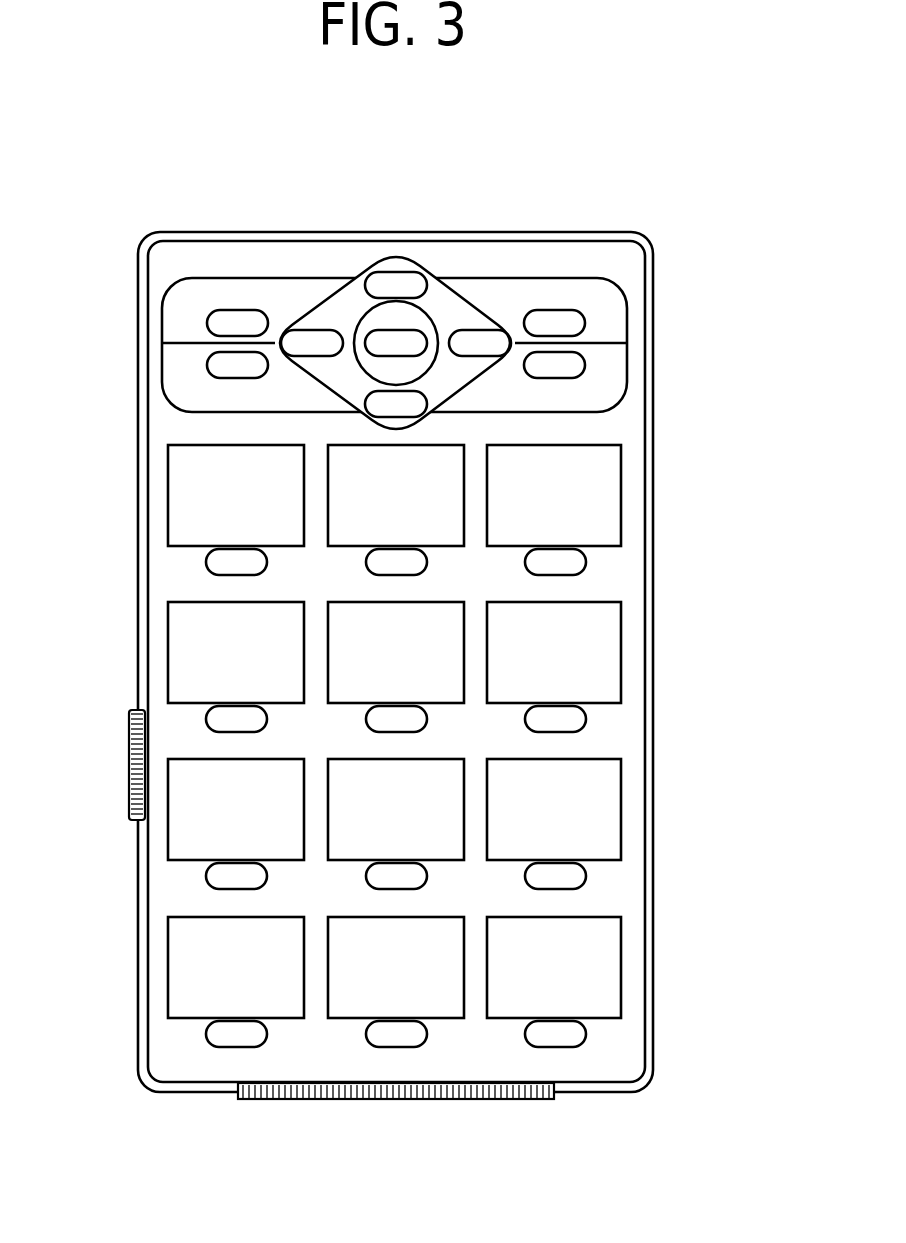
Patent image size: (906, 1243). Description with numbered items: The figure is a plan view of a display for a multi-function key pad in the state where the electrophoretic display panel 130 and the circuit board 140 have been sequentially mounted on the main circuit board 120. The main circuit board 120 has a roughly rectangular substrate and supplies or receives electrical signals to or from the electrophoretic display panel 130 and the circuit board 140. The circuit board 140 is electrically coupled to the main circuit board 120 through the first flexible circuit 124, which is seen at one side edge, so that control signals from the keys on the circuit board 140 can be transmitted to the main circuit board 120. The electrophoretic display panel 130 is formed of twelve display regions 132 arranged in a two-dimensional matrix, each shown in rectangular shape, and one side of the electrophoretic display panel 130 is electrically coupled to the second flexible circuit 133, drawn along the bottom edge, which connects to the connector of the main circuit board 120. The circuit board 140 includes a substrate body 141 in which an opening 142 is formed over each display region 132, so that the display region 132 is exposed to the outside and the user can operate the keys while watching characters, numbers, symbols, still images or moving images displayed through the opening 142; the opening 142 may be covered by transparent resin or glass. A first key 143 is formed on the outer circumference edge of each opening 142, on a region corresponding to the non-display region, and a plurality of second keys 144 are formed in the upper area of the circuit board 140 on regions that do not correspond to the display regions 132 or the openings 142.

The main circuit board 120 is at (660, 247).
The first flexible circuit 124 is at (128, 766).
The electrophoretic display panel 130 is at (582, 688).
The display region 132 is at (597, 648).
The second flexible circuit 133 is at (383, 1100).
The circuit board 140 is at (624, 228).
The substrate body 141 is at (568, 255).
The opening 142 is at (616, 510).
The first key 143 is at (573, 568).
The second keys 144 is at (478, 342).